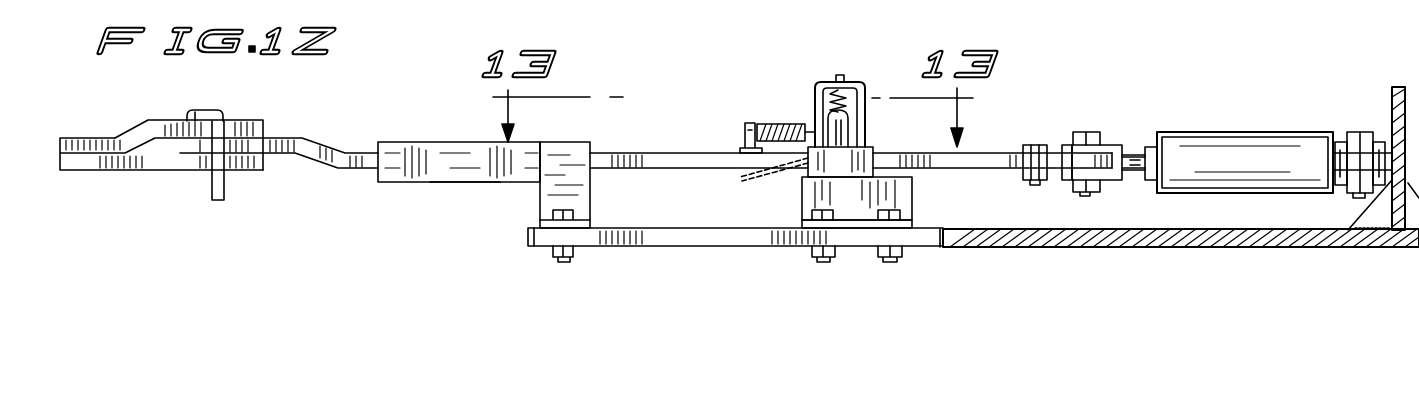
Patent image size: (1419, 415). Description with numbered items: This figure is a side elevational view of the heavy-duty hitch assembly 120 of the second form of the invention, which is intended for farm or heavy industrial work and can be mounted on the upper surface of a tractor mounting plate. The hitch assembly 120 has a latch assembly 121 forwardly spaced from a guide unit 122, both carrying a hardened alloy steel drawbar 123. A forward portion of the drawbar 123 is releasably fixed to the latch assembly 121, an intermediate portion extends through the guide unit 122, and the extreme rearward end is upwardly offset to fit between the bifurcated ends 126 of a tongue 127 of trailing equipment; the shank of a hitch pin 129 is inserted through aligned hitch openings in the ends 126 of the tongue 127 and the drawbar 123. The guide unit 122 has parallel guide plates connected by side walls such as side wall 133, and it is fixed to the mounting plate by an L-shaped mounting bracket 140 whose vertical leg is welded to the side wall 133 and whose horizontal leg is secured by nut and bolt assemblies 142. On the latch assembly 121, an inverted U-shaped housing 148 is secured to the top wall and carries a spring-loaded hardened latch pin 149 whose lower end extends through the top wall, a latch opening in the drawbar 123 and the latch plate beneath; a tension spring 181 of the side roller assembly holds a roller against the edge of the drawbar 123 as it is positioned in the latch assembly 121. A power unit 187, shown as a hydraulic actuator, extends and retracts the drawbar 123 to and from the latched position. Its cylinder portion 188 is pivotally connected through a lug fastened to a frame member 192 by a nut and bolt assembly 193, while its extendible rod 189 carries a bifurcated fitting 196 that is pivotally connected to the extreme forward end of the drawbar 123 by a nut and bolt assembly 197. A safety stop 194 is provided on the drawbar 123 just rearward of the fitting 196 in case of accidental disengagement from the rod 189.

The hitch assembly 120 is at (1126, 120).
The latch assembly 121 is at (930, 182).
The guide unit 122 is at (424, 128).
The drawbar 123 is at (662, 154).
The bifurcated ends 126 is at (253, 121).
The tongue 127 is at (103, 148).
The hitch pin 129 is at (207, 187).
The side wall 133 is at (465, 182).
The L-shaped mounting bracket 140 is at (590, 195).
The nut and bolt assemblies 142 is at (553, 250).
The U-shaped housing 148 is at (823, 82).
The latch pin 149 is at (840, 77).
The tension spring 181 is at (782, 127).
The power unit 187 is at (1248, 118).
The cylinder portion 188 is at (1278, 158).
The rod 189 is at (1133, 155).
The frame member 192 is at (1391, 102).
The nut and bolt assembly 193 is at (1360, 137).
The safety stop 194 is at (1040, 145).
The fitting 196 is at (1112, 181).
The nut and bolt assembly 197 is at (1088, 132).